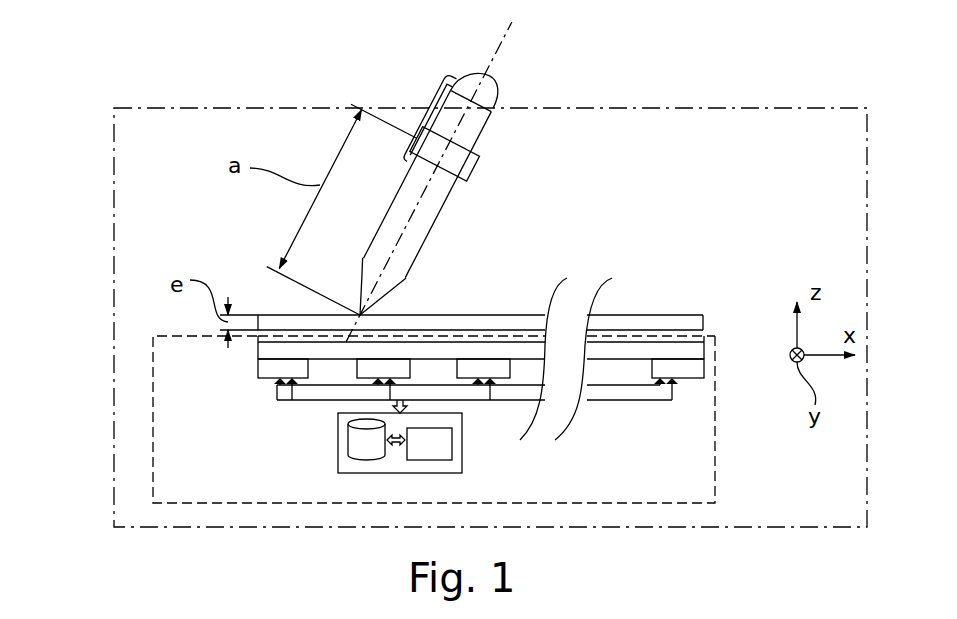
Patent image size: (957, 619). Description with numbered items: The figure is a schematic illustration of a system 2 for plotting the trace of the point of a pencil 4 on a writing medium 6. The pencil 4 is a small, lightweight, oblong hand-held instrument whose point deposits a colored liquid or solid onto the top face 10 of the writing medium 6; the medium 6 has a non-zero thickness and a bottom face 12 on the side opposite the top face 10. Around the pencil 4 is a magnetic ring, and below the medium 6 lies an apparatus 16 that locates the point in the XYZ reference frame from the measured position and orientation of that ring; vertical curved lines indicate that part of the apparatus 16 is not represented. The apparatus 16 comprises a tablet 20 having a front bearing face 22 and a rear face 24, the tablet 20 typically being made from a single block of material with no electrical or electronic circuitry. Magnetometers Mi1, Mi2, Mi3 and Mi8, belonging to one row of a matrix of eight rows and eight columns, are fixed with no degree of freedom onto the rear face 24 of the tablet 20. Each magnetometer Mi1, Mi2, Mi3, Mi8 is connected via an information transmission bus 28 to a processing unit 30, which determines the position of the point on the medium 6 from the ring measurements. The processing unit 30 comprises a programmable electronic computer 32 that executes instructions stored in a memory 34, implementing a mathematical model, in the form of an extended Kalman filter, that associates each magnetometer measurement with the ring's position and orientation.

The system 2 is at (110, 250).
The pencil 4 is at (402, 178).
The writing medium 6 is at (498, 283).
The top face 10 is at (648, 315).
The bottom face 12 is at (680, 330).
The apparatus 16 is at (200, 335).
The tablet 20 is at (255, 351).
The front bearing face 22 is at (257, 340).
The rear face 24 is at (287, 386).
The information transmission bus 28 is at (300, 398).
The processing unit 30 is at (409, 455).
The programmable electronic computer 32 is at (437, 452).
The memory 34 is at (363, 433).
The magnetometer Mi1 is at (285, 370).
The magnetometer Mi2 is at (358, 370).
The magnetometer Mi3 is at (465, 368).
The magnetometer Mi8 is at (683, 372).